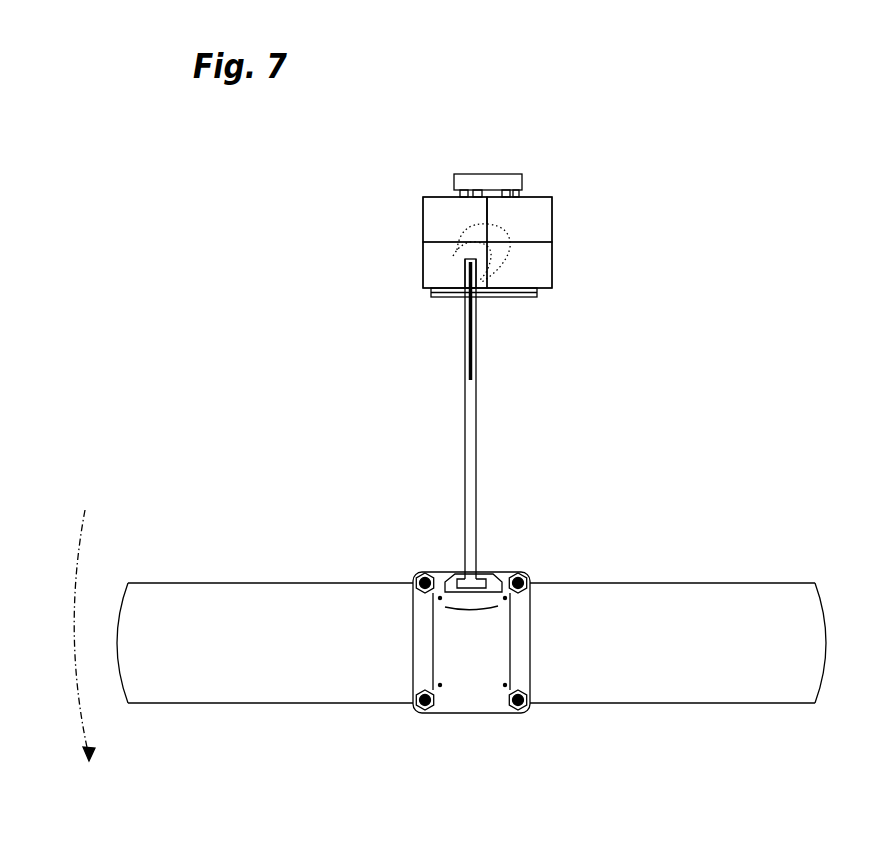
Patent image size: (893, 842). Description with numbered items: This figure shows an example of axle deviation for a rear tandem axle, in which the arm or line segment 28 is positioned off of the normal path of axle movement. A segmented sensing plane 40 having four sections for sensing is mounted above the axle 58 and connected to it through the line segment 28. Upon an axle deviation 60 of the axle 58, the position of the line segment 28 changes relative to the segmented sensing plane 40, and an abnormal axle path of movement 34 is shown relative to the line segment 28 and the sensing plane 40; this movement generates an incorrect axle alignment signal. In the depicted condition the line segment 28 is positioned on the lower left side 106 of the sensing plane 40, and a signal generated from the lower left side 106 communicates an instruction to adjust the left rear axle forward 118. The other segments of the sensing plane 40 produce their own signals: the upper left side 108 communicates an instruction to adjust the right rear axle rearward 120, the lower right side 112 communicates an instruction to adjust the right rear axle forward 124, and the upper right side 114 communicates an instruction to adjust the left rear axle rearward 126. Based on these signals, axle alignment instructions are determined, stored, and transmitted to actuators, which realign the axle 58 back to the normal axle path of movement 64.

The line segment 28 is at (477, 430).
The abnormal axle path of movement 34 is at (460, 277).
The segmented sensing plane 40 is at (618, 197).
The axle 58 is at (699, 590).
The axle deviation 60 is at (73, 597).
The normal axle path of movement 64 is at (497, 233).
The lower left side 106 is at (423, 265).
The upper left side 108 is at (423, 215).
The lower right side 112 is at (552, 272).
The upper right side 114 is at (552, 218).
The left rear axle forward adjustment 118 is at (455, 273).
The right rear axle rearward adjustment 120 is at (464, 213).
The right rear axle forward adjustment 124 is at (493, 261).
The left rear axle rearward adjustment 126 is at (496, 245).